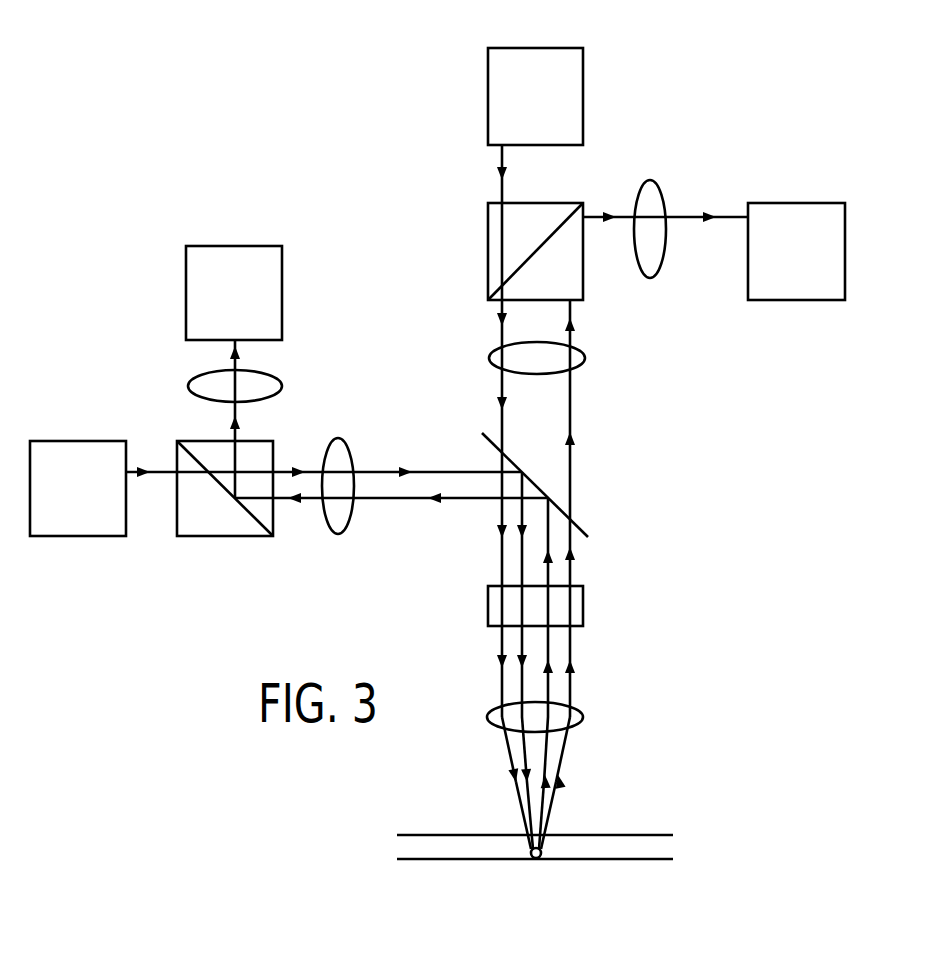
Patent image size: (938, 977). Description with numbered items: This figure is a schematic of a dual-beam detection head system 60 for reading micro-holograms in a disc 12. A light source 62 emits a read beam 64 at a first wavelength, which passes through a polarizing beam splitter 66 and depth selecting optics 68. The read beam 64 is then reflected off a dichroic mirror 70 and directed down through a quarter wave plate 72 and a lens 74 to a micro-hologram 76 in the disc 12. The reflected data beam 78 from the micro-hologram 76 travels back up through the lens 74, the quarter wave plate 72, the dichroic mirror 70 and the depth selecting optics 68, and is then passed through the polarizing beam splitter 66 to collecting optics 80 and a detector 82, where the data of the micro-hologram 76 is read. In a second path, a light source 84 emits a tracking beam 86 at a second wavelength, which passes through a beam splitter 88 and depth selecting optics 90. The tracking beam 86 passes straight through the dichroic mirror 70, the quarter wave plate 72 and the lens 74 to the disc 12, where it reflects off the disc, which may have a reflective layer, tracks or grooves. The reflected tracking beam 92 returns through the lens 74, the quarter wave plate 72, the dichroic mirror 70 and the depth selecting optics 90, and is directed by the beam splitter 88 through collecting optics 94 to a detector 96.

The disc 12 is at (656, 846).
The dual-beam detection head system 60 is at (260, 42).
The light source 62 is at (92, 536).
The read beam 64 is at (163, 472).
The polarizing beam splitter 66 is at (222, 536).
The depth selecting optics 68 is at (338, 438).
The dichroic mirror 70 is at (555, 500).
The quarter wave plate 72 is at (583, 602).
The lens 74 is at (583, 718).
The micro-hologram 76 is at (538, 860).
The reflected data beam 78 is at (547, 753).
The collecting optics 80 is at (188, 388).
The detector 82 is at (282, 296).
The light source 84 is at (583, 95).
The tracking beam 86 is at (503, 188).
The beam splitter 88 is at (488, 250).
The depth selecting optics 90 is at (583, 360).
The reflected tracking beam 92 is at (553, 808).
The collecting optics 94 is at (650, 180).
The detector 96 is at (797, 203).